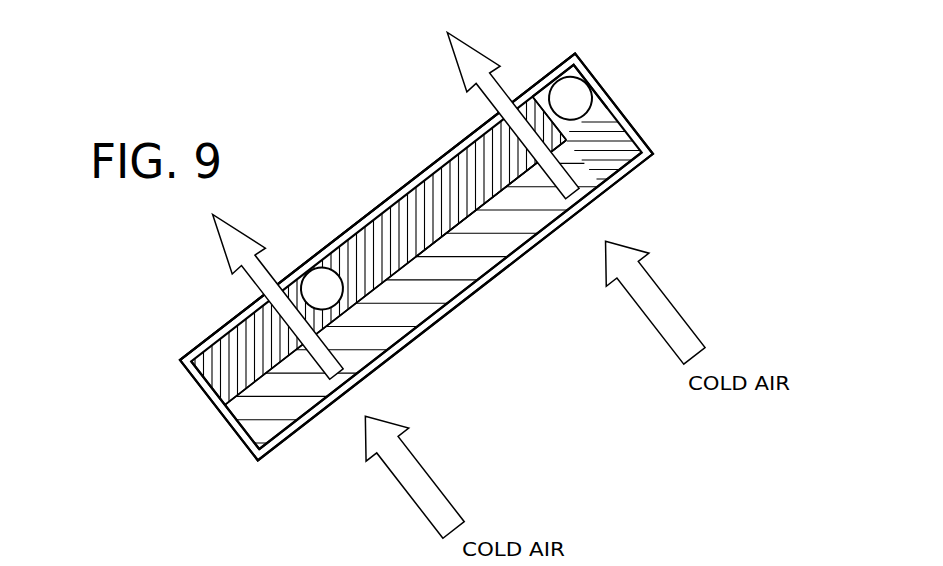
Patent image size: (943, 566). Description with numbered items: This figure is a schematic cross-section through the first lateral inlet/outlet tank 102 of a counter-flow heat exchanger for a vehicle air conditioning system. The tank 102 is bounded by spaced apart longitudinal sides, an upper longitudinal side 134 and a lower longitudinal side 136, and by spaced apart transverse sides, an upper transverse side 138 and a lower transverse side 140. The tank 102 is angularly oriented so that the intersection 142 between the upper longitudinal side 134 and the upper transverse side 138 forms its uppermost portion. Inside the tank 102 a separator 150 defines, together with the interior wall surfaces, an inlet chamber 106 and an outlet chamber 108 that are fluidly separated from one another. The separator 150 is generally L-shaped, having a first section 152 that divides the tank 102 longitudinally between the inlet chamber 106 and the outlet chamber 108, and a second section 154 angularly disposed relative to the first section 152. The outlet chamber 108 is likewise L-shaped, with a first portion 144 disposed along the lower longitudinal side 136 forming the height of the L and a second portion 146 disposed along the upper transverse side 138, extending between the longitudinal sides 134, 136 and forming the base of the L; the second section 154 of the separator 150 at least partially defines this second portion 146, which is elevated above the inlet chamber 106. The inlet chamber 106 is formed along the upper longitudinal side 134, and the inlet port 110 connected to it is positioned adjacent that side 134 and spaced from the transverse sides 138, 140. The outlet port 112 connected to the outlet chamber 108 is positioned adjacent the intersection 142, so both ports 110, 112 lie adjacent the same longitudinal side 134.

The first lateral inlet/outlet tank 102 is at (155, 402).
The inlet chamber 106 is at (225, 345).
The outlet chamber 108 is at (612, 170).
The inlet port 110 is at (318, 283).
The outlet port 112 is at (570, 93).
The upper longitudinal side 134 is at (351, 226).
The lower longitudinal side 136 is at (463, 303).
The upper transverse side 138 is at (607, 95).
The lower transverse side 140 is at (228, 416).
The intersection 142 is at (574, 54).
The first portion of the outlet chamber 144 is at (377, 347).
The second portion of the outlet chamber 146 is at (587, 140).
The separator 150 is at (482, 212).
The first section of the separator 152 is at (438, 238).
The second section of the separator 154 is at (540, 102).